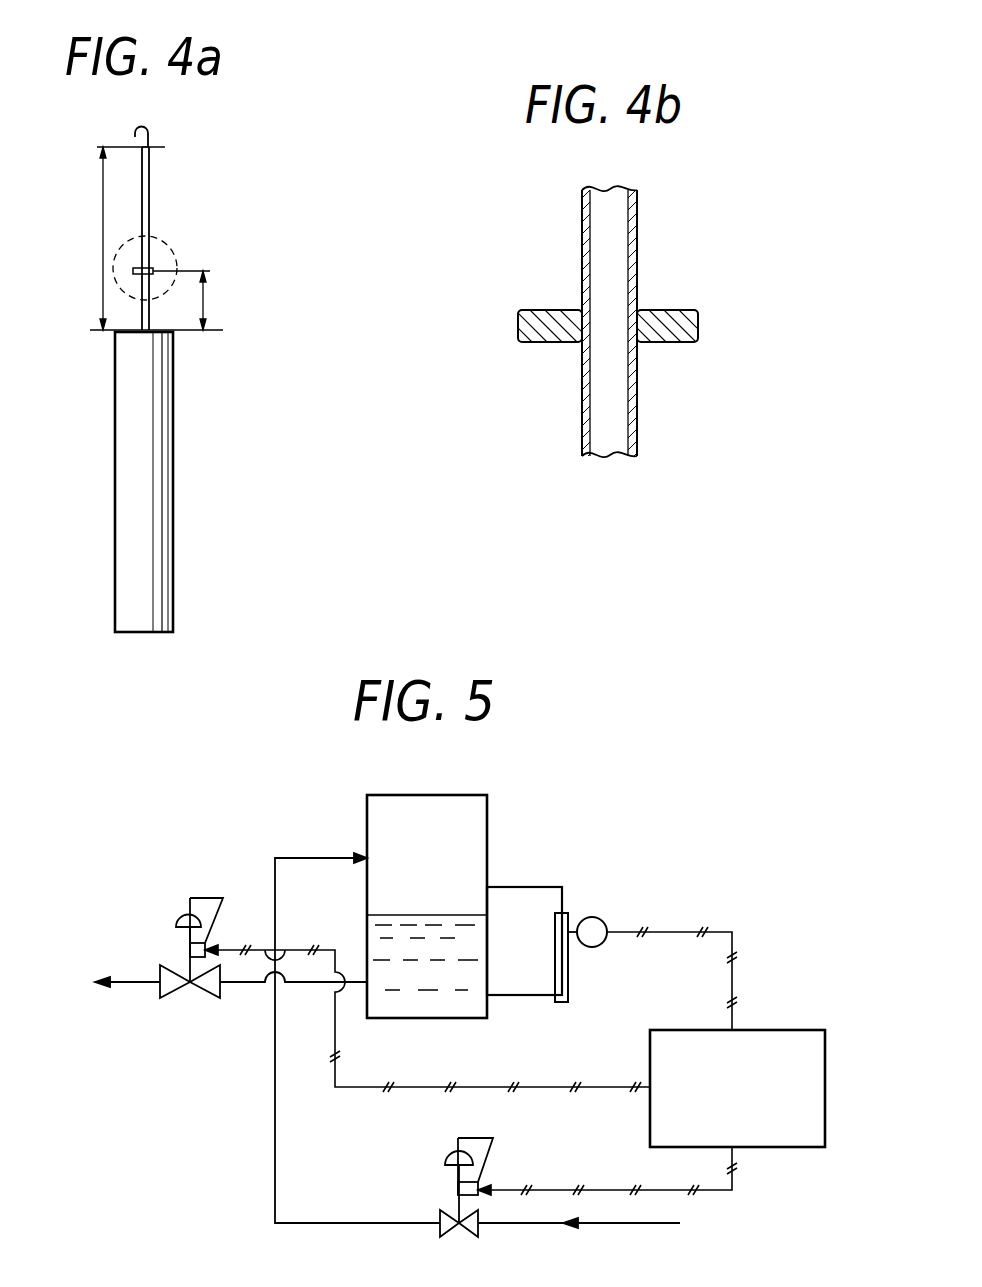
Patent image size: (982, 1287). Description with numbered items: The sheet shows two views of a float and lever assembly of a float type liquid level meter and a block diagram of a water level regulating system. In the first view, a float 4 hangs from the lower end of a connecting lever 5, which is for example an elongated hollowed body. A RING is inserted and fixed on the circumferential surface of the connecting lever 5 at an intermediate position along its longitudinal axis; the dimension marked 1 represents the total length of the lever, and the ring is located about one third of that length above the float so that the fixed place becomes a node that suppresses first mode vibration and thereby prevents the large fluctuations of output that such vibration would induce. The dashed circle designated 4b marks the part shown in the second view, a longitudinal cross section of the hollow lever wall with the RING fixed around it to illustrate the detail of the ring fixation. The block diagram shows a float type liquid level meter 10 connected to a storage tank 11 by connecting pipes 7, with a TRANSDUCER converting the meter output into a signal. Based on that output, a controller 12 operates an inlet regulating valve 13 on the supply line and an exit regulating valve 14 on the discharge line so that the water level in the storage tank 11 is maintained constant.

In FIG. 4a, the rod length dimension 1 is at (156, 238).
In FIG. 4a, the float 4 is at (173, 483).
In FIG. 4b, the float 4 is at (637, 222).
In FIG. 4a, the part designated as 4b is at (158, 237).
In FIG. 4a, the connecting lever 5 is at (149, 172).
In FIG. 4a, the ring RING is at (153, 267).
In FIG. 4b, the ring RING is at (670, 315).
In FIG. 5, the connecting pipes 7 is at (530, 885).
In FIG. 5, the float type liquid level meter 10 is at (570, 913).
In FIG. 5, the transducer TRANSDUCER is at (601, 920).
In FIG. 5, the storage tank 11 is at (463, 805).
In FIG. 5, the controller 12 is at (773, 1030).
In FIG. 5, the inlet regulating valve 13 is at (448, 1158).
In FIG. 5, the exit regulating valve 14 is at (183, 908).